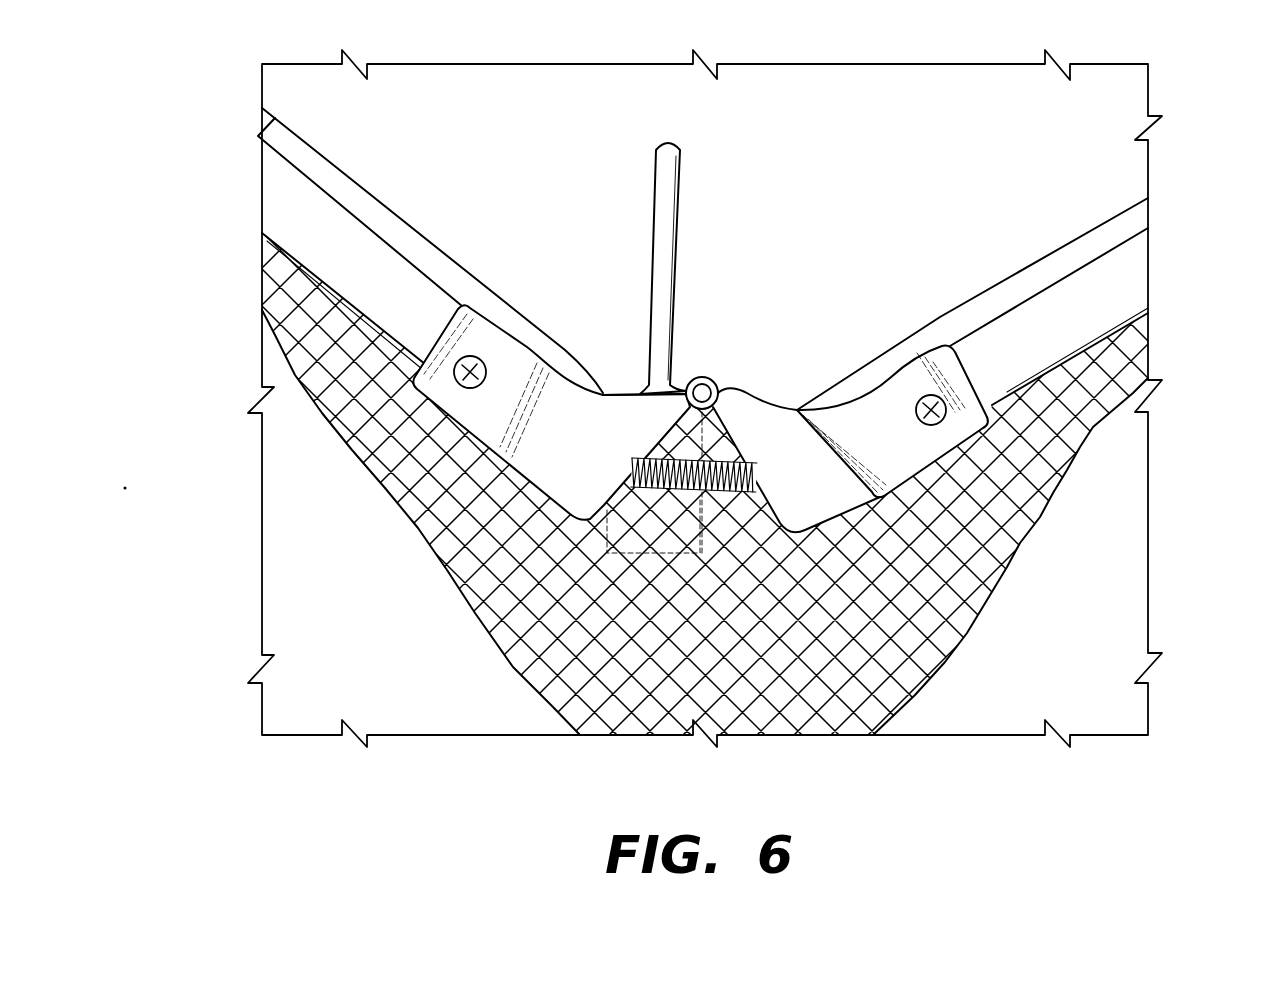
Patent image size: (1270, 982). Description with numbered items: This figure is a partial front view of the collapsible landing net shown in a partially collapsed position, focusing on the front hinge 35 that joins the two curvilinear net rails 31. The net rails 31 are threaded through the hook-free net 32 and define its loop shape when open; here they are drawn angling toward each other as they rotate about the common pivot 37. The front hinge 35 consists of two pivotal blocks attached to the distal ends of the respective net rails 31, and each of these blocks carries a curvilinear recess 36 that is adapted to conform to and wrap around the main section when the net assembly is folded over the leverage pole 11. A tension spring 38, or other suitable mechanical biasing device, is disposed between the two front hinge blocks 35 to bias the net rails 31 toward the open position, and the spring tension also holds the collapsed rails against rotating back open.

The leverage pole 11 is at (634, 179).
The net rail 31 is at (266, 195).
The net 32 is at (427, 527).
The front hinge 35 is at (660, 397).
The curvilinear recess 36 is at (527, 347).
The common pivot 37 is at (702, 377).
The tension spring 38 is at (730, 453).